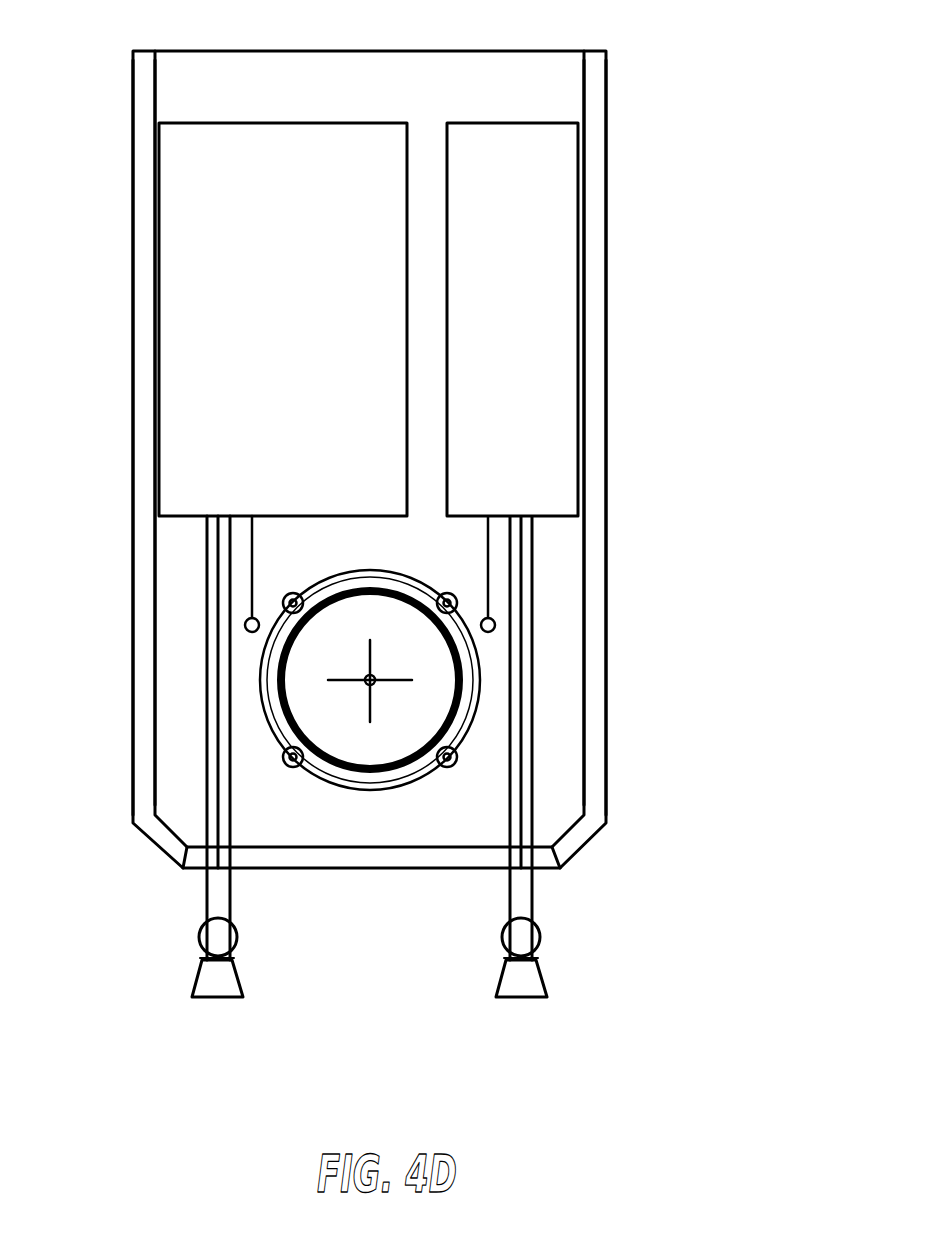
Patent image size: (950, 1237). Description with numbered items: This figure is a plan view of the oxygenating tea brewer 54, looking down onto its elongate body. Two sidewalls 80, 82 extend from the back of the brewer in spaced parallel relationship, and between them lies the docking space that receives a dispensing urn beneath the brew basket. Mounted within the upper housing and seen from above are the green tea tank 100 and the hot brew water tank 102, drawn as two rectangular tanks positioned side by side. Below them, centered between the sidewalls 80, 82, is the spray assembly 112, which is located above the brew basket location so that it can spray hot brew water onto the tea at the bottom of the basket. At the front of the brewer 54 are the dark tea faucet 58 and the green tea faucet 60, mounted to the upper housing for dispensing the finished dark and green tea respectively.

The oxygenating tea brewer 54 is at (665, 74).
The dark tea faucet 58 is at (213, 982).
The green tea faucet 60 is at (520, 983).
The sidewall 80 is at (590, 591).
The sidewall 82 is at (147, 670).
The green tea tank 100 is at (510, 262).
The hot brew water tank 102 is at (237, 299).
The spray assembly 112 is at (433, 681).